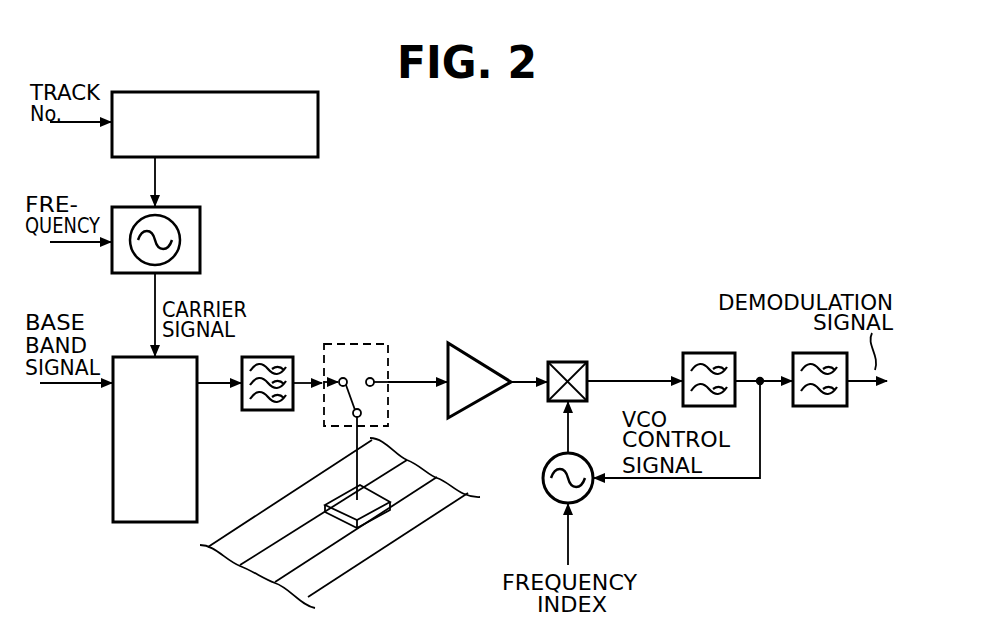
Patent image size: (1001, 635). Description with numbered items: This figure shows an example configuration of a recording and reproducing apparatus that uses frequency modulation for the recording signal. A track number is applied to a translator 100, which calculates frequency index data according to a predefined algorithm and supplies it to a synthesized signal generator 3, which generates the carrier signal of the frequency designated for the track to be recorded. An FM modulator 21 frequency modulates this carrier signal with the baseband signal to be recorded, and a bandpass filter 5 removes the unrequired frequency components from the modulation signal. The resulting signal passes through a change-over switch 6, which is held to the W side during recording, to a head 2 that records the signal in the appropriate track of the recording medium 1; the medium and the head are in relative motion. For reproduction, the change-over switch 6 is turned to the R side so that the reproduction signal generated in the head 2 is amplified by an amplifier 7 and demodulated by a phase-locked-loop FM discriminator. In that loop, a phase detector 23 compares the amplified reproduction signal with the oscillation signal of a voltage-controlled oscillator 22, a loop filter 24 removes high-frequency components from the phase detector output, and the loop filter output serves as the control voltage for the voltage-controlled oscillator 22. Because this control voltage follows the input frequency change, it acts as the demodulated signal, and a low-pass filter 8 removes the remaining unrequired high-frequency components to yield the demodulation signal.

The translator 100 is at (268, 157).
The synthesized signal generator 3 is at (205, 253).
The FM modulator 21 is at (197, 447).
The bandpass filter 5 is at (265, 353).
The change-over switch 6 is at (333, 408).
The amplifier 7 is at (490, 360).
The phase detector 23 is at (568, 360).
The loop filter 24 is at (710, 353).
The low-pass filter 8 is at (817, 407).
The voltage-controlled oscillator 22 is at (580, 500).
The recording medium 1 is at (420, 502).
The head 2 is at (372, 503).